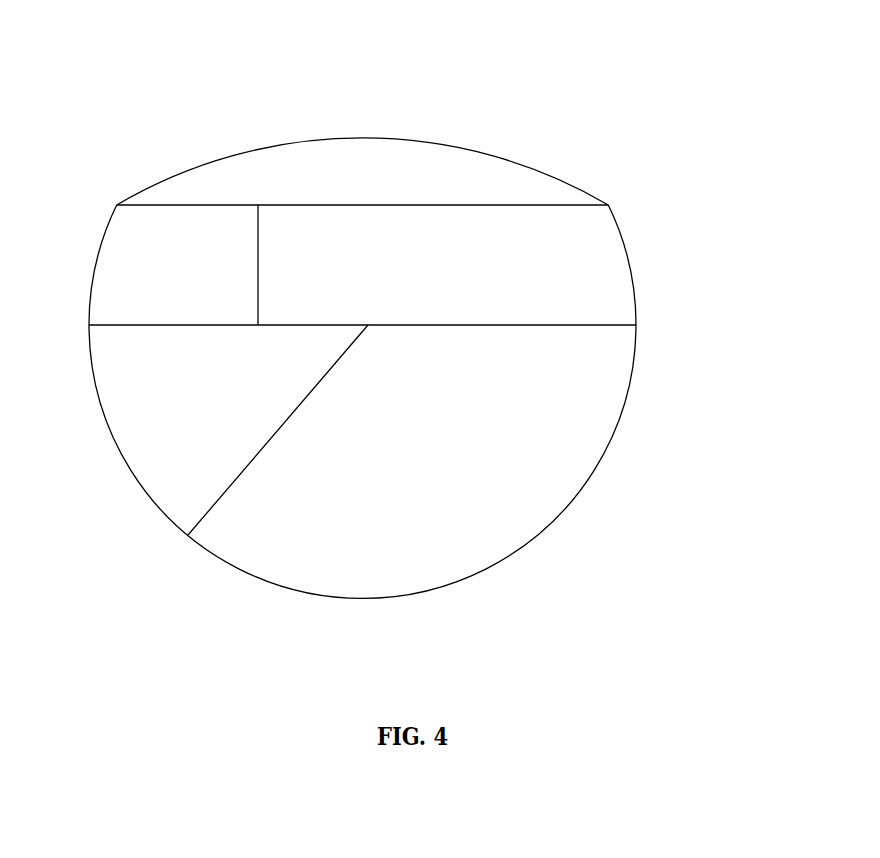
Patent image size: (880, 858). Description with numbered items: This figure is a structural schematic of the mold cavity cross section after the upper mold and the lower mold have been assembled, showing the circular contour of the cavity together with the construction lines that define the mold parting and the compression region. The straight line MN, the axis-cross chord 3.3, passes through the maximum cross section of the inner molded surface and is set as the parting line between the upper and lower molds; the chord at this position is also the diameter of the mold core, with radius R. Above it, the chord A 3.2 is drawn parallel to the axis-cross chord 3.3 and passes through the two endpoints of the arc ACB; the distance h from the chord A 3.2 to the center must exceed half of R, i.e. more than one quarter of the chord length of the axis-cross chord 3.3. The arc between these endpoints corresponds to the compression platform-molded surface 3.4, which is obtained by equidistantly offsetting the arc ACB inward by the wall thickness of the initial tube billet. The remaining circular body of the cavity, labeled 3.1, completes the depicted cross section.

The circular body portion 3.1 is at (371, 444).
The chord A 3.2 is at (367, 168).
The axis-cross chord 3.3 is at (426, 424).
The molded surface 3.4 is at (363, 108).